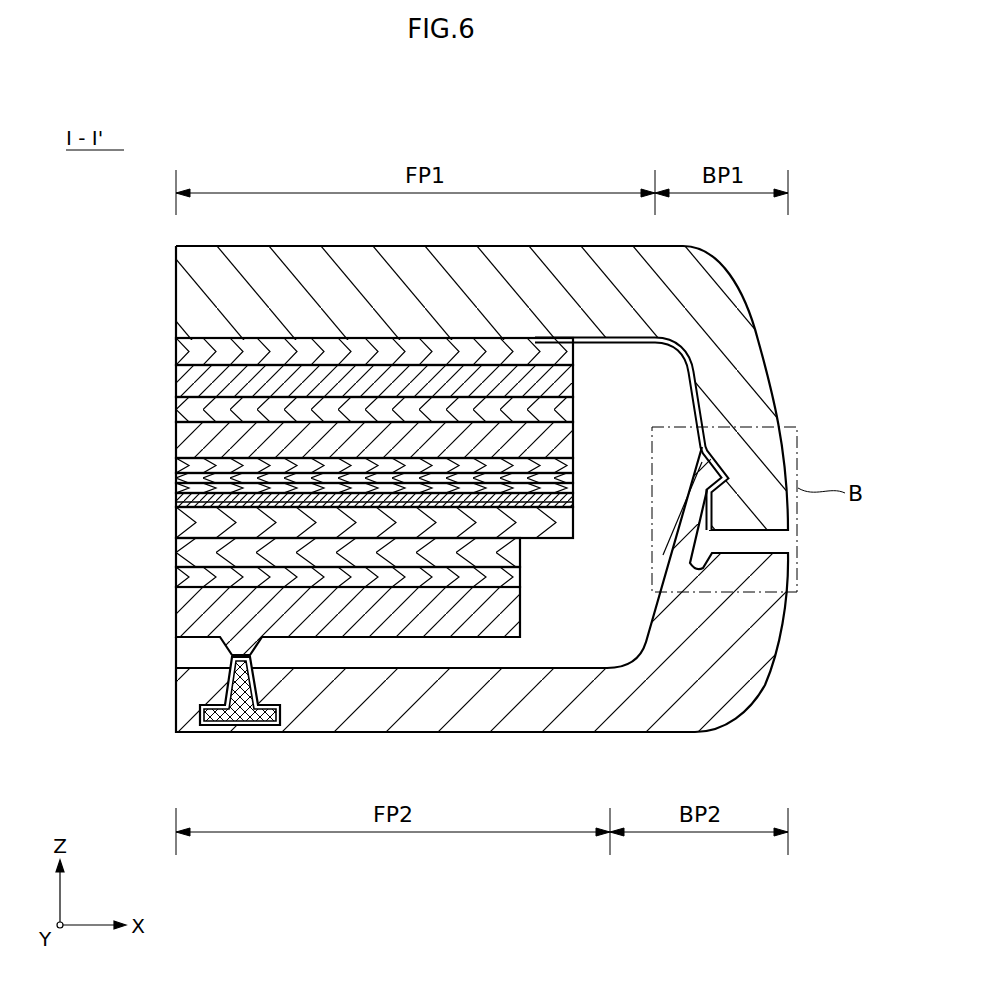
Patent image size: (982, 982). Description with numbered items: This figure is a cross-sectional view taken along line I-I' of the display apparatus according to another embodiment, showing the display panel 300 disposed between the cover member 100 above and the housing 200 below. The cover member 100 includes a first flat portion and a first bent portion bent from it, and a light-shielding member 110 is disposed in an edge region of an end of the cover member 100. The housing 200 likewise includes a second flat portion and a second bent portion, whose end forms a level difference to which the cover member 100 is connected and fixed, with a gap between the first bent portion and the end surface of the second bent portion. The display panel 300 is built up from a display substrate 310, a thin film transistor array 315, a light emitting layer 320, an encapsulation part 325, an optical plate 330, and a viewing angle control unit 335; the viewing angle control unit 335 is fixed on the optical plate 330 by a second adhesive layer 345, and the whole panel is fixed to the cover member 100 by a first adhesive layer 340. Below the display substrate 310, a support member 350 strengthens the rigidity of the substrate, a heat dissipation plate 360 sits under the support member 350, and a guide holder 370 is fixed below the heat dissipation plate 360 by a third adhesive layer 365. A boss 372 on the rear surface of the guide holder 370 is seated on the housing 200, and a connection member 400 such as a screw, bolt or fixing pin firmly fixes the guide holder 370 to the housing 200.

The cover member 100 is at (176, 296).
The light-shielding member 110 is at (693, 372).
The housing 200 is at (766, 648).
The display panel 300 is at (68, 333).
The display substrate 310 is at (176, 522).
The thin film transistor array 315 is at (176, 492).
The light emitting layer 320 is at (176, 478).
The encapsulation part 325 is at (176, 466).
The optical plate 330 is at (176, 440).
The viewing angle control unit 335 is at (176, 381).
The first adhesive layer 340 is at (176, 351).
The second adhesive layer 345 is at (176, 410).
The support member 350 is at (176, 552).
The heat dissipation plate 360 is at (176, 577).
The third adhesive layer 365 is at (176, 612).
The guide holder 370 is at (176, 652).
The boss 372 is at (176, 680).
The connection member 400 is at (226, 733).